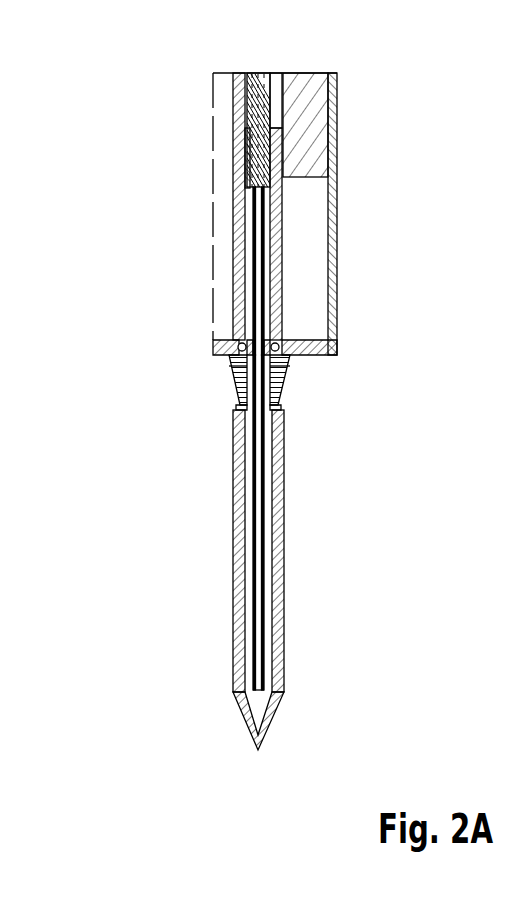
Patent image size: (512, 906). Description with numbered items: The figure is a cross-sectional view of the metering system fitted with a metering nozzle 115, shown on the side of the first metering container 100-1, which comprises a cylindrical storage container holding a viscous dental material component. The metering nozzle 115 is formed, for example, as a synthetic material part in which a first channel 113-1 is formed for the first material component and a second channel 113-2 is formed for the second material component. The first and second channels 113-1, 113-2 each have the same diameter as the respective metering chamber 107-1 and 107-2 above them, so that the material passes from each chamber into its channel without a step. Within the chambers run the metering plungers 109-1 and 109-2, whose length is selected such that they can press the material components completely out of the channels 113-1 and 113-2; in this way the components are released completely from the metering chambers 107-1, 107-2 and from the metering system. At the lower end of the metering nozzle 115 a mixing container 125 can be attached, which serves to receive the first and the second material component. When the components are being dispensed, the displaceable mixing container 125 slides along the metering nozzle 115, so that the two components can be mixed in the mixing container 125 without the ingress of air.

The first metering container 100-1 is at (352, 312).
The first metering chamber 107-1 is at (265, 233).
The second metering chamber 107-2 is at (250, 252).
The first metering plunger 109-1 is at (268, 115).
The second metering plunger 109-2 is at (250, 150).
The first channel 113-1 is at (264, 520).
The second channel 113-2 is at (236, 523).
The metering nozzle 115 is at (280, 383).
The mixing container 125 is at (284, 654).